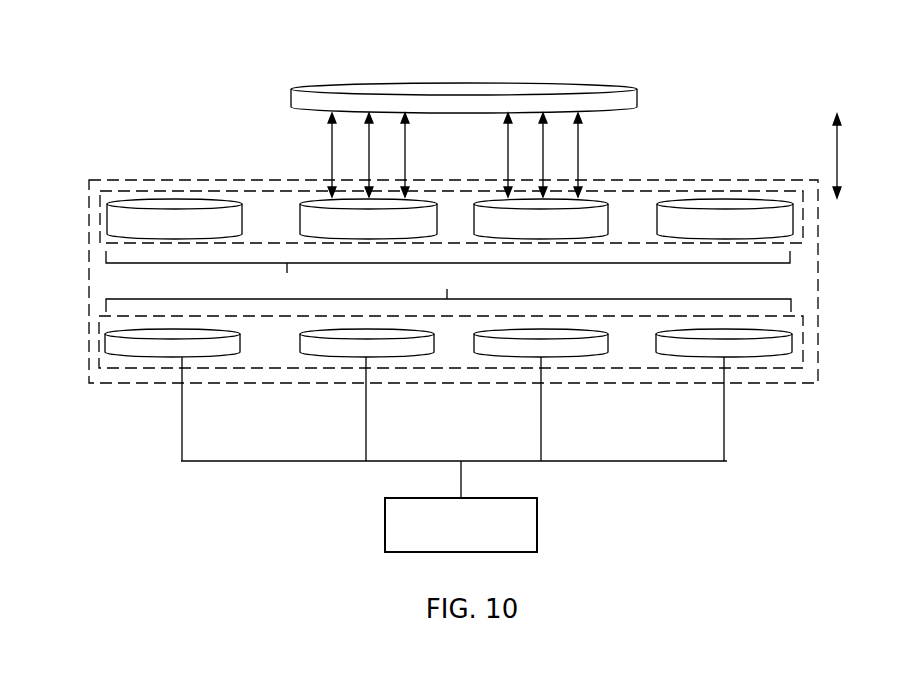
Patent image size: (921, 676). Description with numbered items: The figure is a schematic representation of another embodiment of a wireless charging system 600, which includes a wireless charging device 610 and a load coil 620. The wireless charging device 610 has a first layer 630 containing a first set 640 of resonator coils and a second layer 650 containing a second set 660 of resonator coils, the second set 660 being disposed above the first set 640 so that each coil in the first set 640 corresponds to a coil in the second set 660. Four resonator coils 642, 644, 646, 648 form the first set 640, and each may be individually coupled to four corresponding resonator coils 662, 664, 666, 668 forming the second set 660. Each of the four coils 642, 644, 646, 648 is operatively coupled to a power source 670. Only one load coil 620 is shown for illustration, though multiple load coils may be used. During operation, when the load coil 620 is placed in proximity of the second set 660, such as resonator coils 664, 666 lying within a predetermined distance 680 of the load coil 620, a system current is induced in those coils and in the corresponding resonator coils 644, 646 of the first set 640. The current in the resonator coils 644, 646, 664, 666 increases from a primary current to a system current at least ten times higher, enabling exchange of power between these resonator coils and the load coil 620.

The wireless charging system 600 is at (812, 46).
The wireless charging device 610 is at (819, 282).
The load coil 620 is at (638, 100).
The first layer 630 is at (117, 373).
The first set of resonator coils 640 is at (448, 289).
The resonator coil 642 is at (105, 342).
The resonator coil 644 is at (300, 341).
The resonator coil 646 is at (474, 341).
The resonator coil 648 is at (793, 344).
The second layer 650 is at (118, 190).
The second set of resonator coils 660 is at (448, 274).
The resonator coil 662 is at (107, 220).
The resonator coil 664 is at (303, 195).
The resonator coil 666 is at (480, 195).
The resonator coil 668 is at (795, 217).
The power source 670 is at (538, 526).
The predetermined distance 680 is at (838, 158).